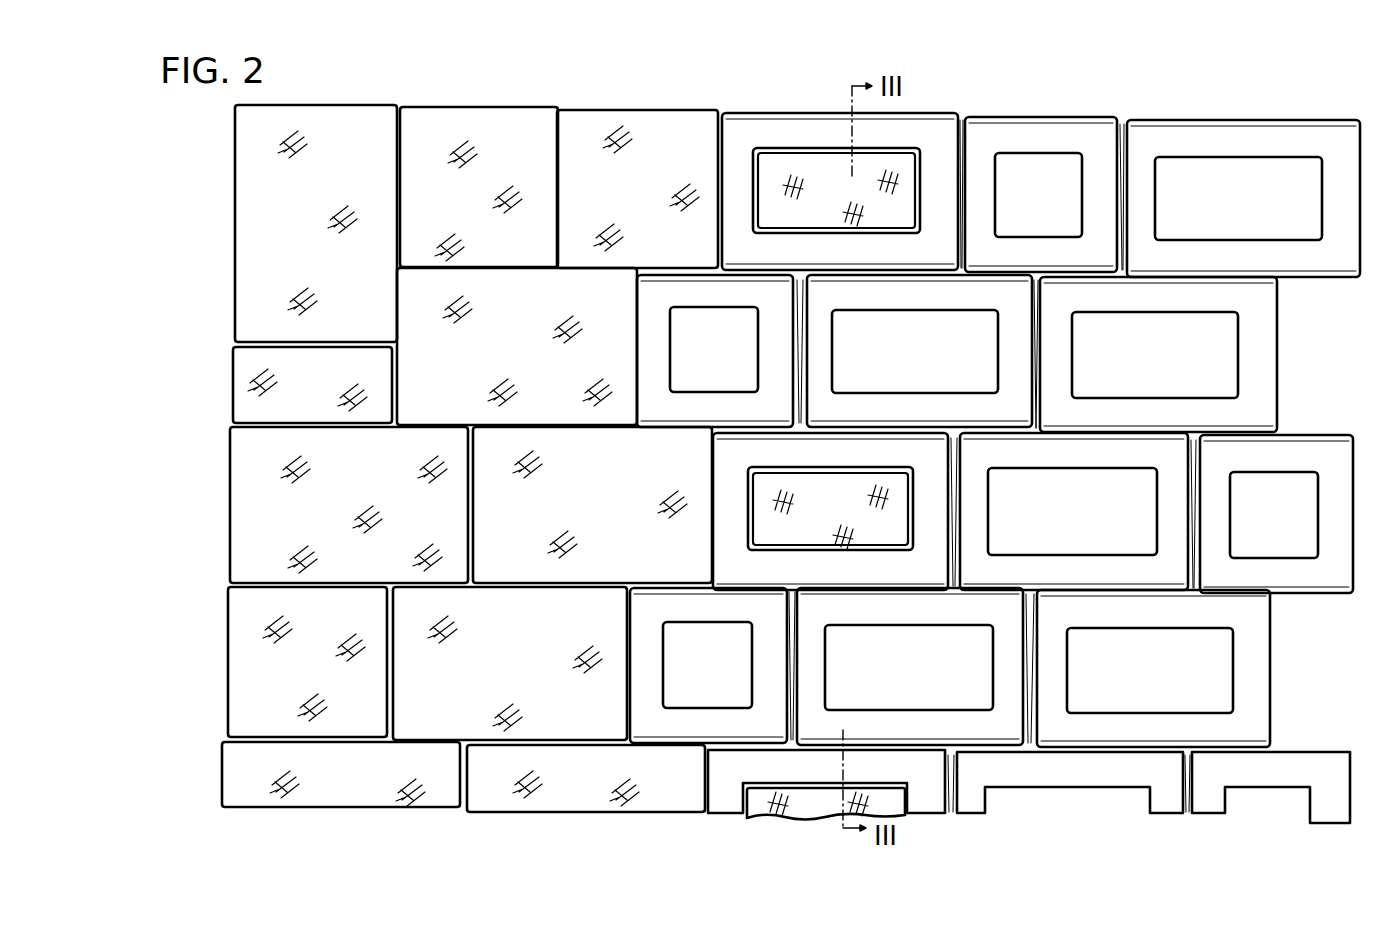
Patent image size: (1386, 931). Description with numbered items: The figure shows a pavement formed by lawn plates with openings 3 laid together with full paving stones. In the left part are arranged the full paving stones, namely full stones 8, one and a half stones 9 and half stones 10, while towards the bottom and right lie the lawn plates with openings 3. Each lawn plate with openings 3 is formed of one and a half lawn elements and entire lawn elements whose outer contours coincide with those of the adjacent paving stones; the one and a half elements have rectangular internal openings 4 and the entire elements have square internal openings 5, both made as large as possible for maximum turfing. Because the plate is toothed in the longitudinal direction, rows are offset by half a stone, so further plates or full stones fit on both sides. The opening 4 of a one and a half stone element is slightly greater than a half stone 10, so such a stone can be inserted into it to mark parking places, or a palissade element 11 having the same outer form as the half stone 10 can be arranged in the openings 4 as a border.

The lawn plate with openings 3 is at (1336, 109).
The internal opening 4 is at (786, 150).
The internal opening 5 is at (1041, 165).
The full stone 8 is at (583, 133).
The one and a half stone 9 is at (248, 224).
The half stone 10 is at (243, 374).
The palissade element 11 is at (914, 170).